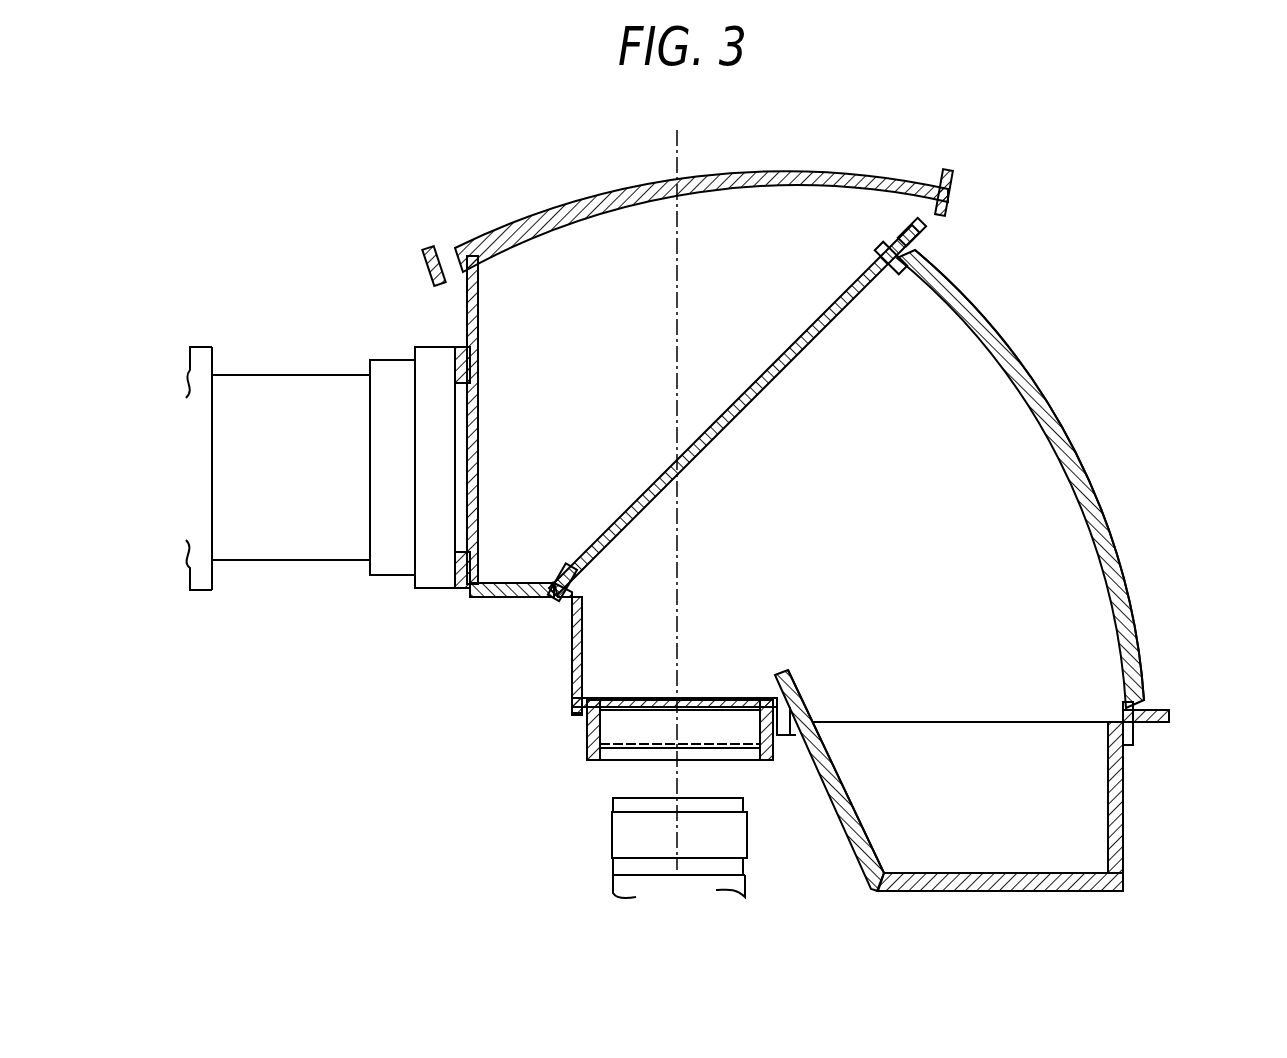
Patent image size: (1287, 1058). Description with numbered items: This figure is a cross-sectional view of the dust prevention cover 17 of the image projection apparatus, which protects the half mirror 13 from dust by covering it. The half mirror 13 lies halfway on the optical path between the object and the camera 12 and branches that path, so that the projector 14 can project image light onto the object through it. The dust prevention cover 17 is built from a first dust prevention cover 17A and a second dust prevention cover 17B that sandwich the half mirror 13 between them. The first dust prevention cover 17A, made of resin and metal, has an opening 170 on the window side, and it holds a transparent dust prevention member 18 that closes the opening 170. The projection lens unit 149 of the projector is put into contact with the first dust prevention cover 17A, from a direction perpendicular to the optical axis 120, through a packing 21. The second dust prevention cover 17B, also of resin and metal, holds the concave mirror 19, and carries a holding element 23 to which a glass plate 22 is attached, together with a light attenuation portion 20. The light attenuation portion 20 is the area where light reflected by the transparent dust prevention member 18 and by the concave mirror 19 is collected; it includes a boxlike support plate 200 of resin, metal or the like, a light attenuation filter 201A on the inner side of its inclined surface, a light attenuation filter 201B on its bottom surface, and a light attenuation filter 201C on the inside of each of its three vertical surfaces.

The camera 12 is at (581, 850).
The half mirror 13 is at (845, 315).
The projector 14 is at (198, 597).
The dust prevention cover 17 is at (1060, 388).
The first dust prevention cover 17A is at (467, 323).
The second dust prevention cover 17B is at (1160, 708).
The transparent dust prevention member 18 is at (765, 174).
The concave mirror 19 is at (1070, 432).
The light attenuation portion 20 is at (1144, 884).
The packing 21 is at (466, 383).
The glass plate 22 is at (613, 752).
The holding element 23 is at (585, 733).
The optical axis 120 is at (676, 160).
The projection lens unit 149 is at (300, 562).
The opening 170 is at (473, 255).
The support plate 200 is at (1125, 833).
The light attenuation filter 201A is at (860, 871).
The light attenuation filter 201B is at (995, 890).
The light attenuation filter 201C is at (1045, 768).